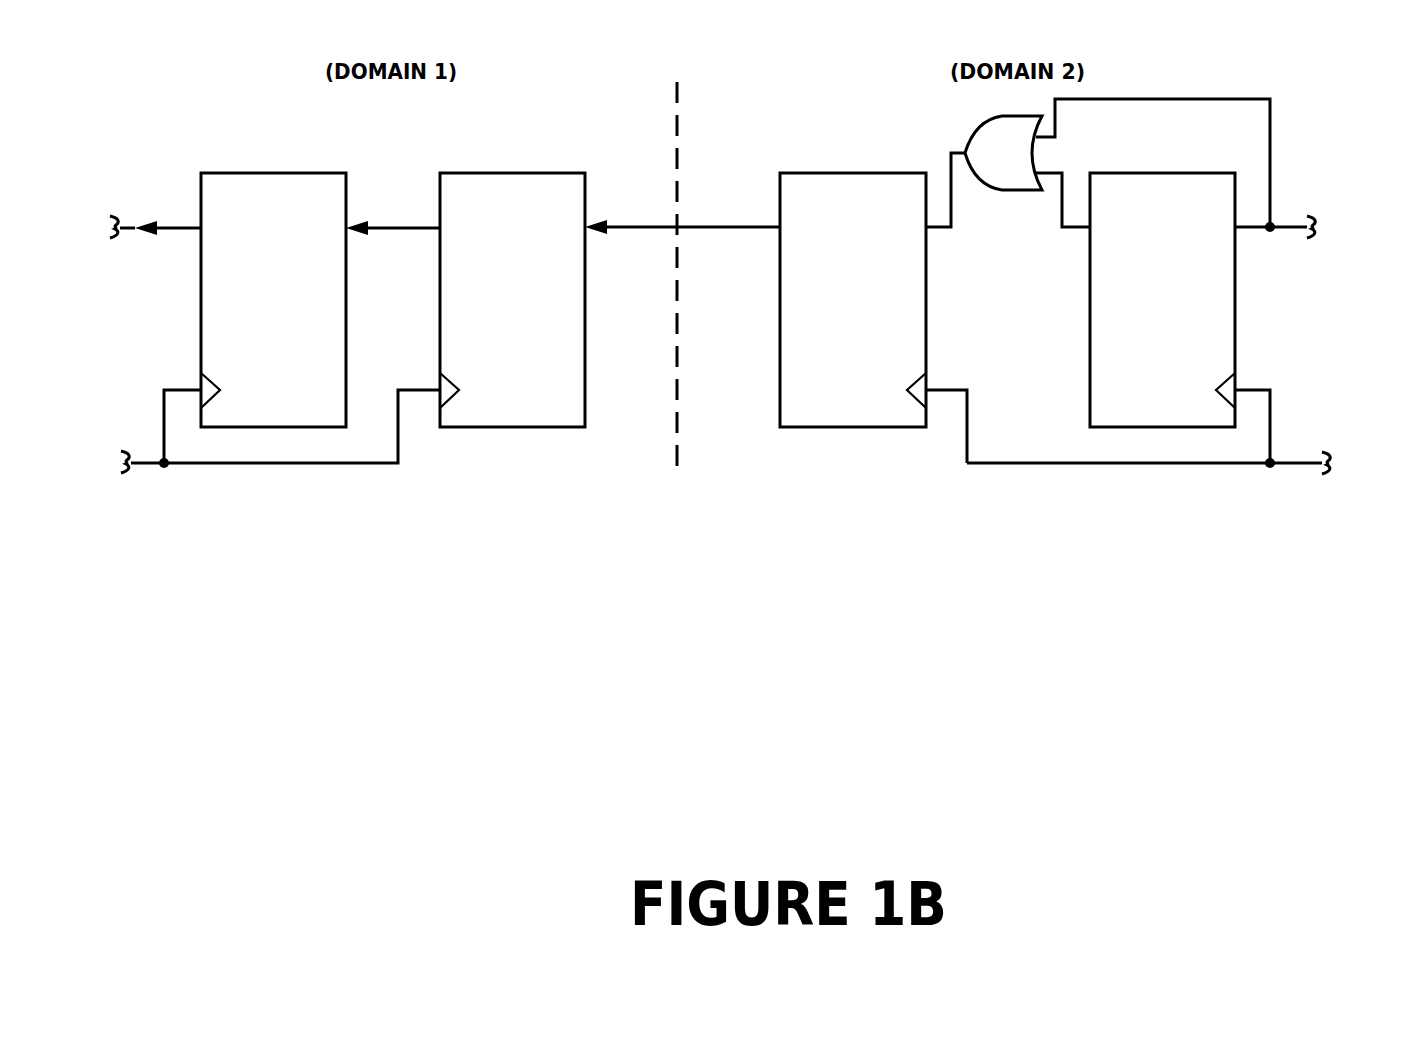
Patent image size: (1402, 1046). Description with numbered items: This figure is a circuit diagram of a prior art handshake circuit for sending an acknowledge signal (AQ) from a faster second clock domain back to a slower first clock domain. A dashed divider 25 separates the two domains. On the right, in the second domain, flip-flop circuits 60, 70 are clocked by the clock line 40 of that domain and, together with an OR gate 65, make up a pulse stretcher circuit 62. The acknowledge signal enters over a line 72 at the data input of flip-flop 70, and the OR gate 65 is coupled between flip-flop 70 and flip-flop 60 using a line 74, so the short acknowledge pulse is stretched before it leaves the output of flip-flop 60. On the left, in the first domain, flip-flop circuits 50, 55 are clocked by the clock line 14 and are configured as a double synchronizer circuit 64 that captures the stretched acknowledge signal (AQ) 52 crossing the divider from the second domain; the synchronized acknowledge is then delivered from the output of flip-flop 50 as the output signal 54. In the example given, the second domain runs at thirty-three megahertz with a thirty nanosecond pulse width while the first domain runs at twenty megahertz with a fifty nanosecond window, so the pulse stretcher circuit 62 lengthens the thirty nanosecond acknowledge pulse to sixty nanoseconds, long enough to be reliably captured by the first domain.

The clock line 14 is at (135, 468).
The dashed divider 25 is at (679, 120).
The clock line 40 is at (1080, 465).
The flip-flop circuit 50 is at (338, 418).
The synchronized signal AQ 52 is at (720, 230).
The output signal 54 is at (110, 217).
The flip-flop circuit 55 is at (576, 418).
The flip-flop circuit 60 is at (821, 418).
The pulse stretcher circuit 62 is at (946, 431).
The double synchronizer circuit 64 is at (422, 423).
The OR gate 65 is at (1021, 165).
The flip-flop circuit 70 is at (1126, 418).
The line 72 is at (1318, 222).
The line 74 is at (1074, 229).